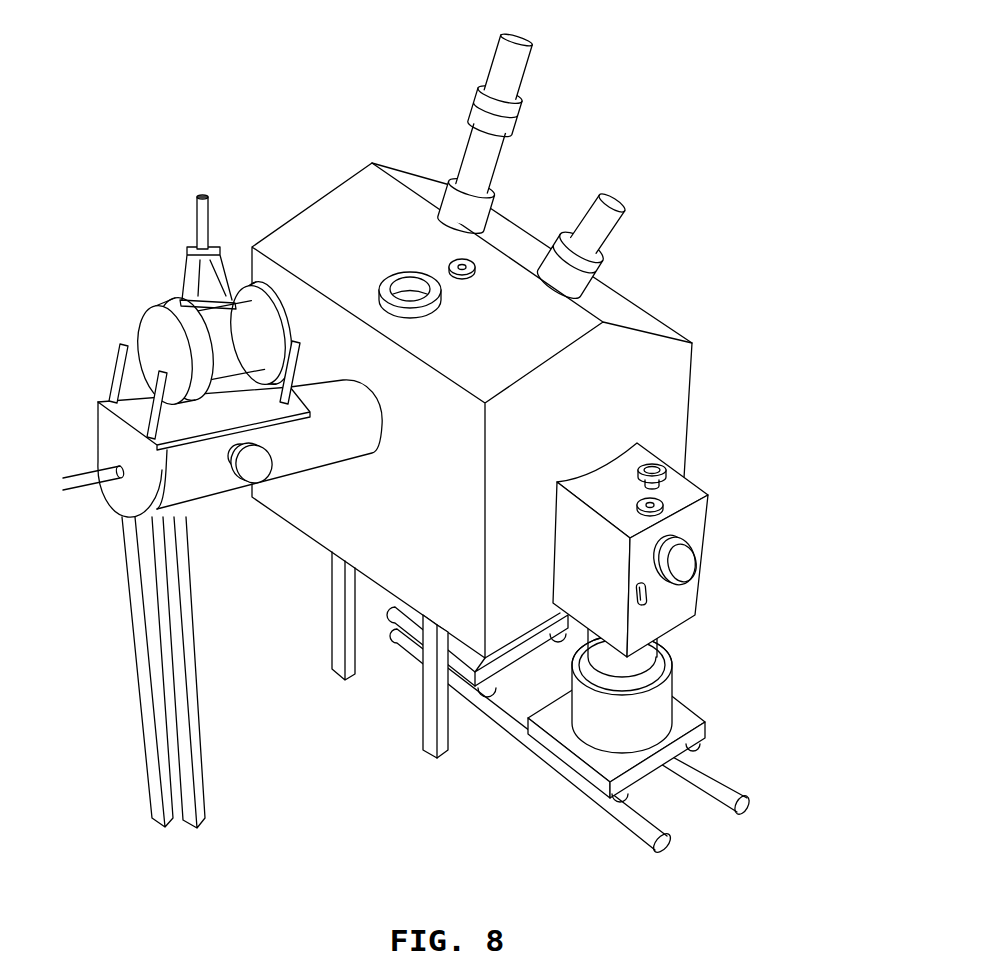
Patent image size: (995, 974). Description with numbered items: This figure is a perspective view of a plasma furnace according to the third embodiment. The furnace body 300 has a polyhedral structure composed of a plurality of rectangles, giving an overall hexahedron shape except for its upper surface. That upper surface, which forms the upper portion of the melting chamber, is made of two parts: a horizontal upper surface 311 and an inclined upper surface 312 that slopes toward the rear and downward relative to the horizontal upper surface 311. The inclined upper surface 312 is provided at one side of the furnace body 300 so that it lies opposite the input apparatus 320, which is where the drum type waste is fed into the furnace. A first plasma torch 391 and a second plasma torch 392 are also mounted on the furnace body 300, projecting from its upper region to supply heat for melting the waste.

The furnace body 300 is at (450, 437).
The horizontal upper surface 311 is at (325, 227).
The inclined upper surface 312 is at (430, 183).
The input apparatus 320 is at (213, 495).
The first plasma torch 391 is at (597, 193).
The second plasma torch 392 is at (512, 58).